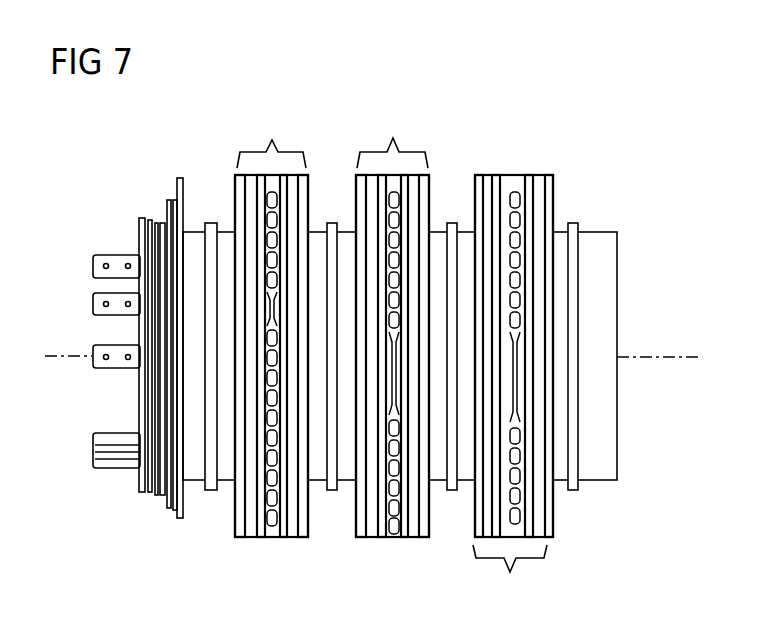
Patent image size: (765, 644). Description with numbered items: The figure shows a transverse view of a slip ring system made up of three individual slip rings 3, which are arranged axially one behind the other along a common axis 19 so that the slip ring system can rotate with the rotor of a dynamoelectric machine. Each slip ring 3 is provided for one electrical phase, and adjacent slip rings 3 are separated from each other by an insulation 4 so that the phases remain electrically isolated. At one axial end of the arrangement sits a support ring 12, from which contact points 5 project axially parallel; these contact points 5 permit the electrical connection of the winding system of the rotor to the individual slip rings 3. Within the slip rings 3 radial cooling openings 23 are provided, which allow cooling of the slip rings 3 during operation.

The slip ring 3 is at (394, 357).
The insulation 4 is at (345, 245).
The contact points 5 is at (113, 297).
The support ring 12 is at (138, 392).
The axis of rotation 19 is at (652, 357).
The radial cooling openings 23 is at (270, 512).